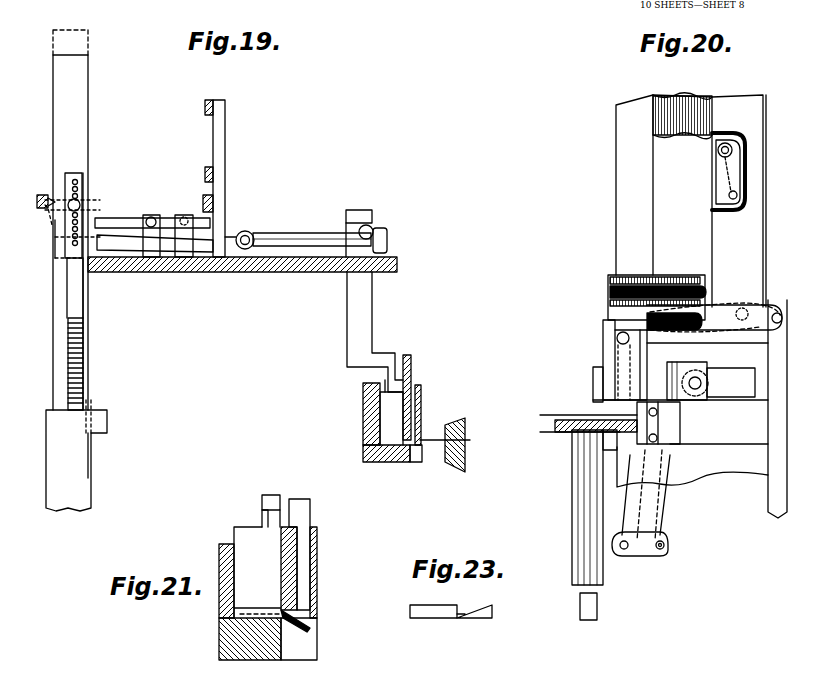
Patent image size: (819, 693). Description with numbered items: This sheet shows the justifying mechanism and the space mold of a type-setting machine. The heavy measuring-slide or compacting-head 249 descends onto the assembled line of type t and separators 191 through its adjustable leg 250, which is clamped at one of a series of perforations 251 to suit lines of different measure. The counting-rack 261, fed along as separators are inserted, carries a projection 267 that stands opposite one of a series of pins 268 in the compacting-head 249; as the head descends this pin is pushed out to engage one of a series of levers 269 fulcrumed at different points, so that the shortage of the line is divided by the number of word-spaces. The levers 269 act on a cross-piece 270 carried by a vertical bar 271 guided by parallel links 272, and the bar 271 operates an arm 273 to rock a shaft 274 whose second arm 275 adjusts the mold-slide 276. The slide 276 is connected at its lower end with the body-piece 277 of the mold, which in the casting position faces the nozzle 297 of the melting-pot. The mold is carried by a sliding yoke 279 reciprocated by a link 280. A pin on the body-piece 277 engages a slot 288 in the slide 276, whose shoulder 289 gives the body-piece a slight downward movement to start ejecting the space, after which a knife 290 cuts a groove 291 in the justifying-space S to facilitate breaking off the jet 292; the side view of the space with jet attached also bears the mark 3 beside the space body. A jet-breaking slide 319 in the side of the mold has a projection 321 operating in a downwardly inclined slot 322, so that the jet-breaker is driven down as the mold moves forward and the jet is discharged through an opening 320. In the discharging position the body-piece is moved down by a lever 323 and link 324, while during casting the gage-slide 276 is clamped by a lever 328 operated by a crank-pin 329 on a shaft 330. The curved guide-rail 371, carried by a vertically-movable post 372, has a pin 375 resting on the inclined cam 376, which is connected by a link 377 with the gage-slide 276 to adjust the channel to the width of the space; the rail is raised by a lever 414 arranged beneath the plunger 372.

In FIG. 19, the measuring-slide 249 is at (84, 80).
In FIG. 19, the series of perforations 251 is at (82, 188).
In FIG. 19, the counting-rack 261 is at (40, 198).
In FIG. 19, the projection 267 is at (56, 236).
In FIG. 19, the adjustable leg 250 is at (78, 290).
In FIG. 19, the separators 191 is at (83, 330).
In FIG. 19, the type t is at (80, 375).
In FIG. 19, the vertically-arranged bar 271 is at (225, 135).
In FIG. 19, the parallel links 272 is at (205, 172).
In FIG. 19, the cross-piece 270 is at (213, 202).
In FIG. 19, the pins 268 is at (105, 216).
In FIG. 19, the levers 269 is at (148, 214).
In FIG. 19, the arm 273 is at (240, 228).
In FIG. 19, the shaft 274 is at (322, 218).
In FIG. 19, the second arm 275 is at (398, 214).
In FIG. 19, the mold-slide 276 is at (360, 294).
In FIG. 20, the mold-slide 276 is at (665, 197).
In FIG. 19, the slot 322 is at (411, 375).
In FIG. 20, the slot 322 is at (680, 322).
In FIG. 19, the jet-breaking slide 319 is at (421, 392).
In FIG. 21, the jet-breaking slide 319 is at (317, 540).
In FIG. 20, the jet-breaking slide 319 is at (603, 355).
In FIG. 19, the body-piece 277 is at (388, 418).
In FIG. 21, the body-piece 277 is at (248, 554).
In FIG. 19, the nozzle 297 is at (437, 425).
In FIG. 21, the projection 321 is at (298, 497).
In FIG. 20, the projection 321 is at (617, 338).
In FIG. 21, the jet 292 is at (312, 628).
In FIG. 23, the jet 292 is at (490, 618).
In FIG. 21, the opening 320 is at (298, 650).
In FIG. 23, the strip 3 is at (423, 607).
In FIG. 23, the groove 291 is at (460, 619).
In FIG. 20, the lever 328 is at (718, 170).
In FIG. 20, the shaft 330 is at (740, 180).
In FIG. 20, the crank-pin 329 is at (745, 195).
In FIG. 20, the slot 288 is at (608, 298).
In FIG. 20, the shoulder 289 is at (668, 282).
In FIG. 20, the lever 323 is at (775, 303).
In FIG. 20, the sliding yoke 279 is at (593, 372).
In FIG. 20, the link 280 is at (728, 375).
In FIG. 20, the justifying-space S is at (581, 406).
In FIG. 20, the knife 290 is at (655, 424).
In FIG. 20, the circular rail 371 is at (595, 437).
In FIG. 20, the pin 375 is at (610, 448).
In FIG. 20, the vertically-movable post 372 is at (597, 573).
In FIG. 20, the cam 376 is at (640, 497).
In FIG. 20, the link 377 is at (665, 528).
In FIG. 20, the link 324 is at (772, 426).
In FIG. 20, the lever 414 is at (597, 615).